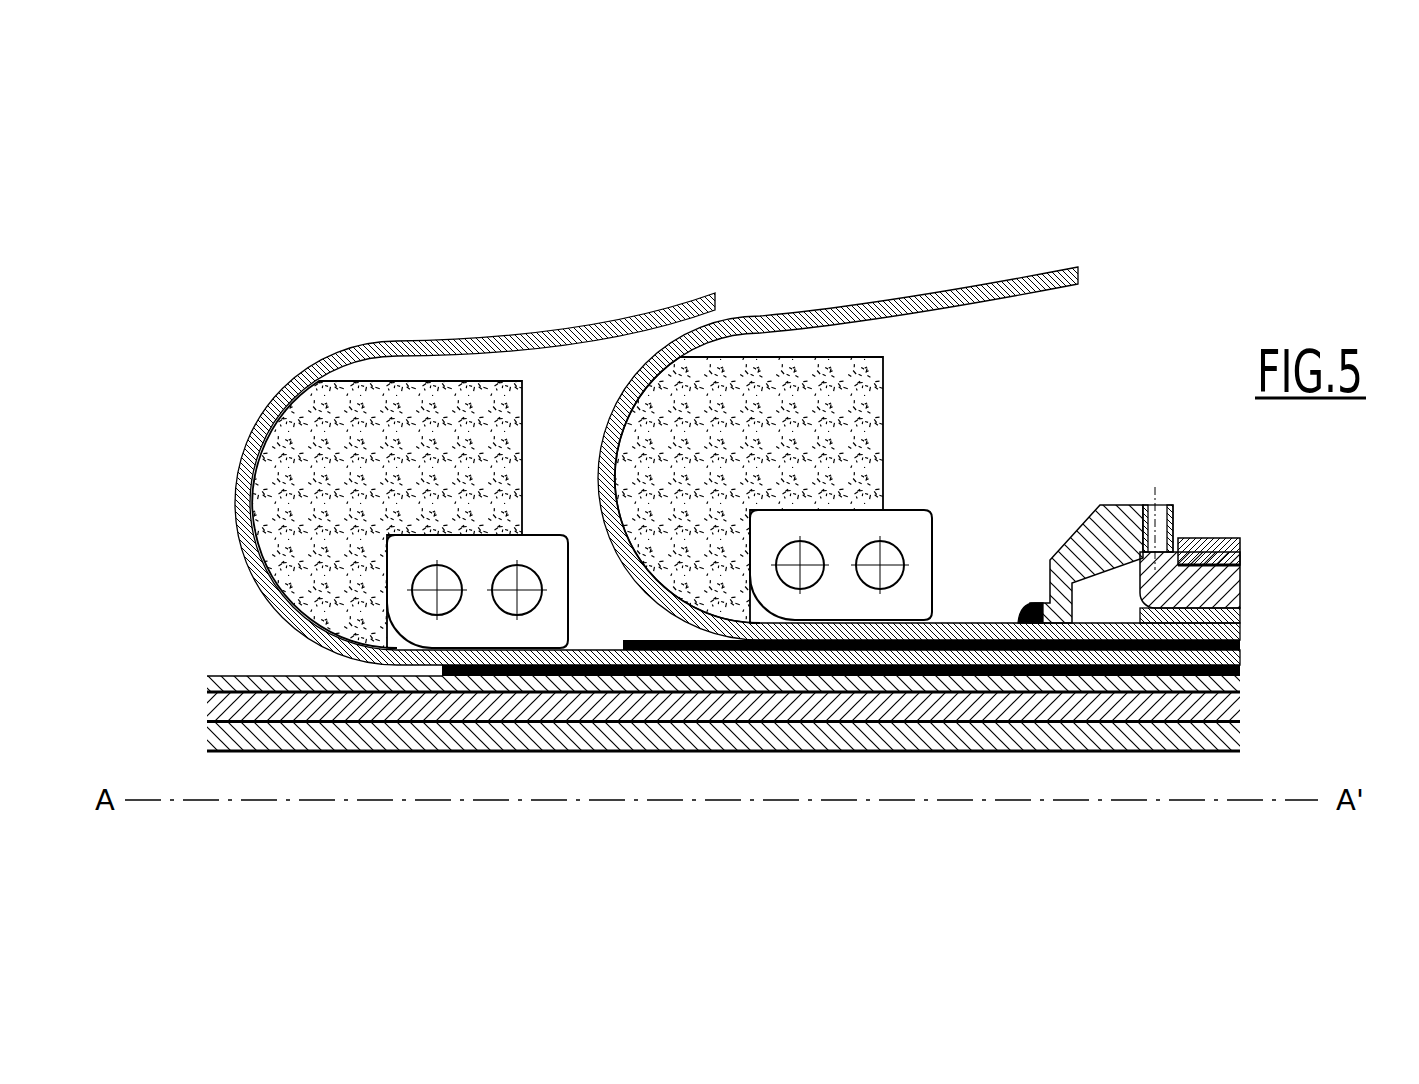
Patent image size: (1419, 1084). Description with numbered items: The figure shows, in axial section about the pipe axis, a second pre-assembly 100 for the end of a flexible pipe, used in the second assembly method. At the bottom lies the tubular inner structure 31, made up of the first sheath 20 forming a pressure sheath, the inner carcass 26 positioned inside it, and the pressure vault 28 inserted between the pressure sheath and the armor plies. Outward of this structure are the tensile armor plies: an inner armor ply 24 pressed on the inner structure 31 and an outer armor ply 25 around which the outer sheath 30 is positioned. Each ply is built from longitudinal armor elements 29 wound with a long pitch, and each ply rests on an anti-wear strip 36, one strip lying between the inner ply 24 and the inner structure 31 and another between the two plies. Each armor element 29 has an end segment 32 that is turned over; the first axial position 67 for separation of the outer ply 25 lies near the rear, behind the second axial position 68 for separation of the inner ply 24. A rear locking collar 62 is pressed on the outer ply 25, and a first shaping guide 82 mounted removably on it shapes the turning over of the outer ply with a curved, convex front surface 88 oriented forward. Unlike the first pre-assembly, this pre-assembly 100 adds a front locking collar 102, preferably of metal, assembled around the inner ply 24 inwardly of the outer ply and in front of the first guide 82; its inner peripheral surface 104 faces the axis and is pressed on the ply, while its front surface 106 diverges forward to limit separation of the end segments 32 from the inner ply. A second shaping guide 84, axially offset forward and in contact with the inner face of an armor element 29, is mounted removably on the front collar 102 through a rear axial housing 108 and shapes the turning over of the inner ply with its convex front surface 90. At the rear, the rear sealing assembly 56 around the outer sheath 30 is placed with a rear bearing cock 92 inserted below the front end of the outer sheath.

The second pre-assembly 100 is at (1128, 238).
The armor element 29 is at (628, 305).
The first shaping guide 82 is at (808, 378).
The rear axial housing 108 is at (448, 552).
The second shaping guide 84 is at (313, 427).
The end segment 32 is at (548, 343).
The front surface 90 is at (236, 524).
The front surface 88 is at (600, 486).
The rear locking collar 62 is at (918, 527).
The anti-wear strip 36 is at (653, 638).
The outer sheath 30 is at (1213, 538).
The rear bearing cock 92 is at (1230, 585).
The rear sealing assembly 56 is at (1303, 613).
The outer armor ply 25 is at (1242, 633).
The inner armor ply 24 is at (1240, 657).
The pressure vault 28 is at (1235, 683).
The tubular inner structure 31 is at (1295, 677).
The first sheath 20 is at (1235, 705).
The front surface 106 is at (408, 637).
The second axial position 68 is at (442, 672).
The front locking collar 102 is at (502, 632).
The inner peripheral surface 104 is at (545, 655).
The first axial position 67 is at (742, 650).
The inner carcass 26 is at (1110, 735).